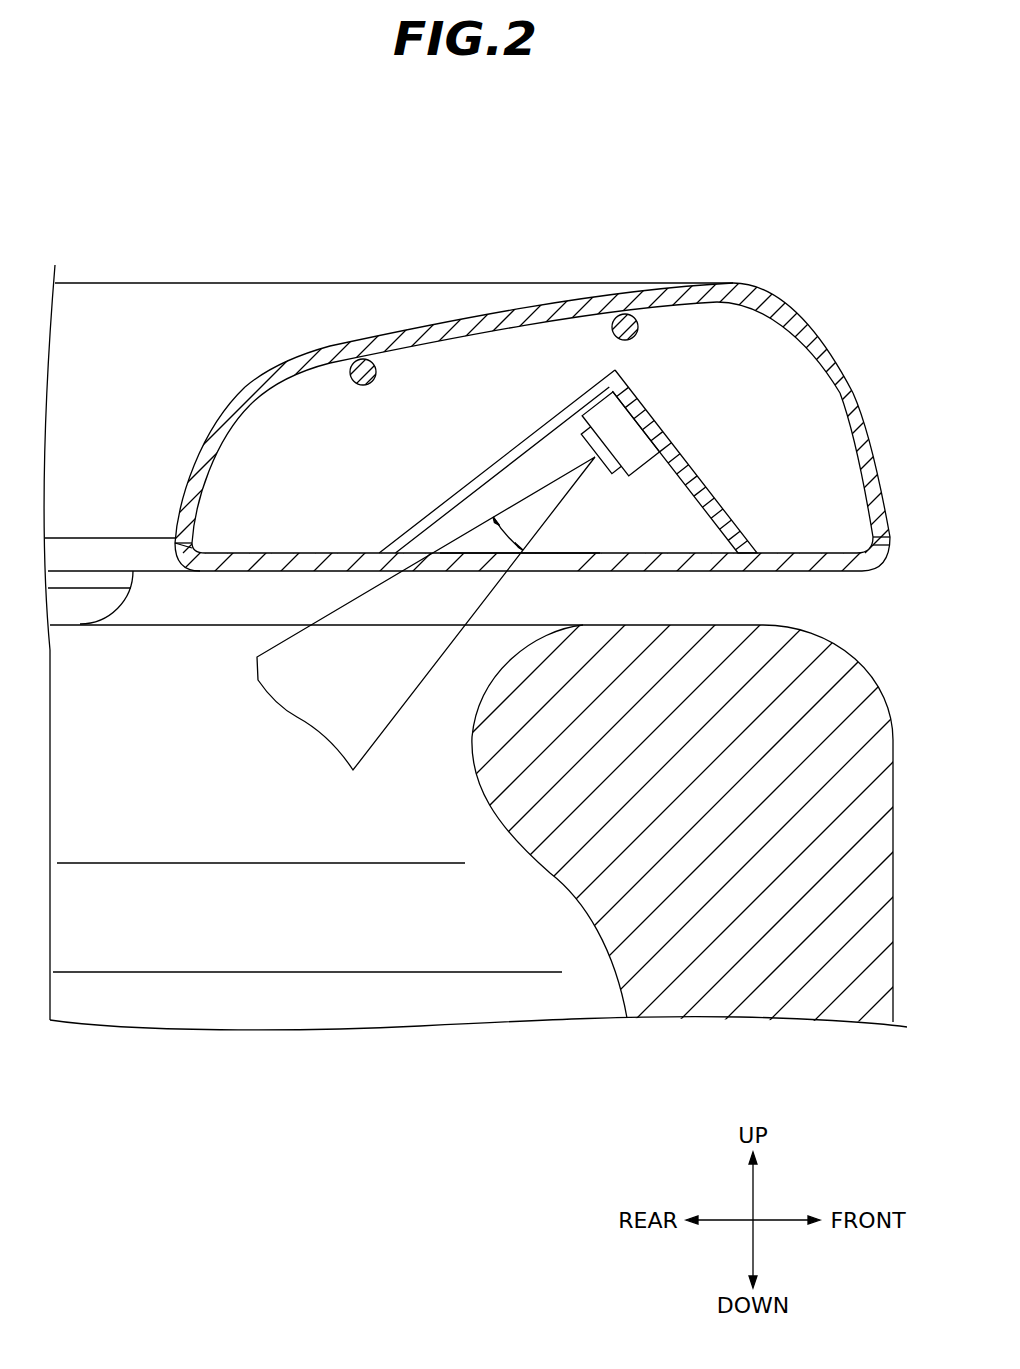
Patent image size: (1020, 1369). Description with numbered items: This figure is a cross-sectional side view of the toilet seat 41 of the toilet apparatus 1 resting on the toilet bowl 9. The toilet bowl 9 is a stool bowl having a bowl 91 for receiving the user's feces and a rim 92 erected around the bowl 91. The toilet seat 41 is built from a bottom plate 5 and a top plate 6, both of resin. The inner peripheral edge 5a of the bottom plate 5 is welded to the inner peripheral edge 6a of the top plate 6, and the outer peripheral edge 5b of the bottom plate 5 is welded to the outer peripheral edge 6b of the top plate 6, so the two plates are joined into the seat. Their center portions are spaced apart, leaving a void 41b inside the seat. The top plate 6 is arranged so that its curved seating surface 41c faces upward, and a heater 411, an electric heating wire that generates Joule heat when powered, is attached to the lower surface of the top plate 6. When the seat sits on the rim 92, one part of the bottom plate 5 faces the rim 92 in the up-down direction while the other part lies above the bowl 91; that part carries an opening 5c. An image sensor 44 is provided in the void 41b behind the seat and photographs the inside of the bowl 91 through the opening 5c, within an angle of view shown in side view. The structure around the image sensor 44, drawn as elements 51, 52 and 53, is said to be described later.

The toilet apparatus 1 is at (614, 198).
The bottom plate 5 is at (882, 562).
The inner peripheral edge of the bottom plate 5a is at (202, 544).
The outer peripheral edge of the bottom plate 5b is at (866, 542).
The opening 5c is at (548, 572).
The top plate 6 is at (878, 433).
The inner peripheral edge of the top plate 6a is at (204, 530).
The outer peripheral edge of the top plate 6b is at (869, 530).
The toilet bowl 9 is at (895, 942).
The bowl 91 is at (271, 1012).
The rim 92 is at (860, 653).
The toilet seat 41 is at (757, 296).
The void 41b is at (372, 494).
The seating surface 41c is at (470, 316).
The heater 411 is at (640, 333).
The image sensor 44 is at (664, 452).
The inclined support leg 51 is at (543, 425).
The support leg 52 is at (706, 487).
The space 53 is at (633, 531).